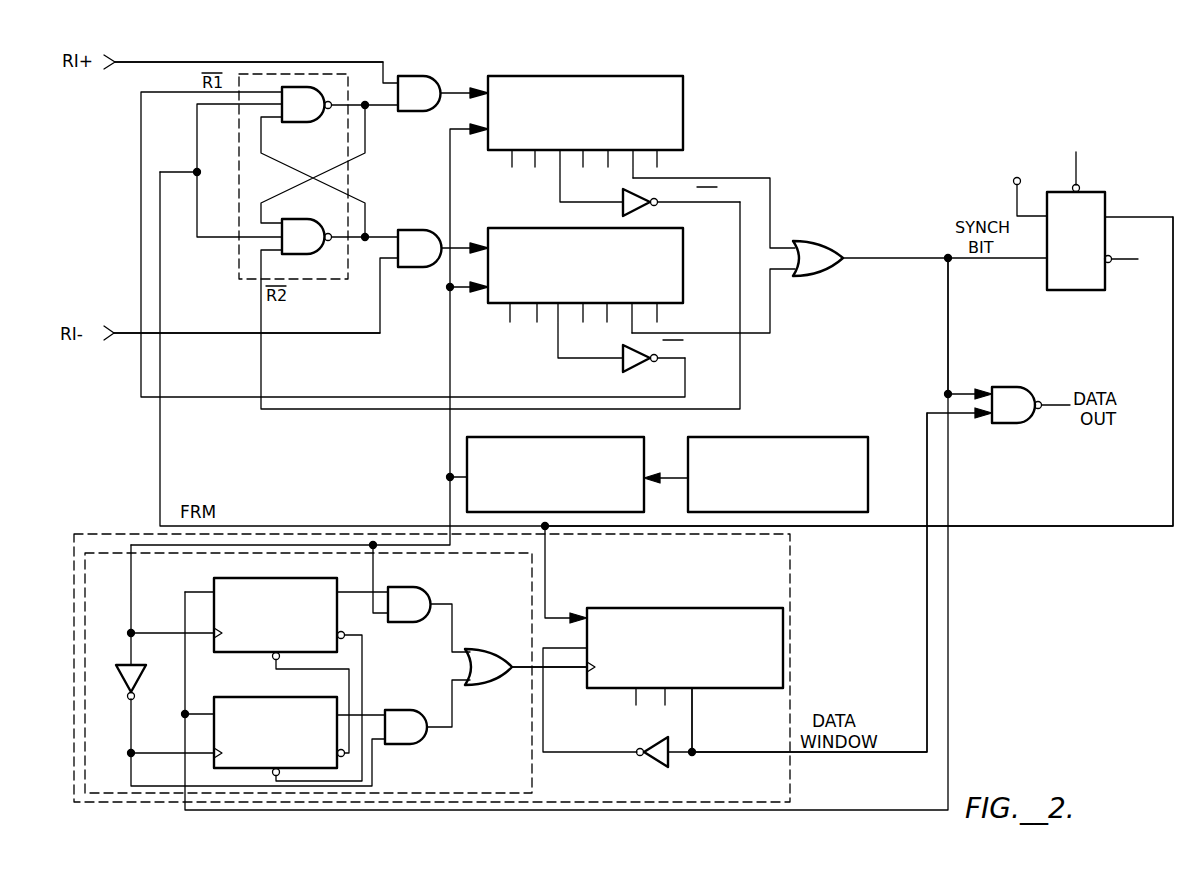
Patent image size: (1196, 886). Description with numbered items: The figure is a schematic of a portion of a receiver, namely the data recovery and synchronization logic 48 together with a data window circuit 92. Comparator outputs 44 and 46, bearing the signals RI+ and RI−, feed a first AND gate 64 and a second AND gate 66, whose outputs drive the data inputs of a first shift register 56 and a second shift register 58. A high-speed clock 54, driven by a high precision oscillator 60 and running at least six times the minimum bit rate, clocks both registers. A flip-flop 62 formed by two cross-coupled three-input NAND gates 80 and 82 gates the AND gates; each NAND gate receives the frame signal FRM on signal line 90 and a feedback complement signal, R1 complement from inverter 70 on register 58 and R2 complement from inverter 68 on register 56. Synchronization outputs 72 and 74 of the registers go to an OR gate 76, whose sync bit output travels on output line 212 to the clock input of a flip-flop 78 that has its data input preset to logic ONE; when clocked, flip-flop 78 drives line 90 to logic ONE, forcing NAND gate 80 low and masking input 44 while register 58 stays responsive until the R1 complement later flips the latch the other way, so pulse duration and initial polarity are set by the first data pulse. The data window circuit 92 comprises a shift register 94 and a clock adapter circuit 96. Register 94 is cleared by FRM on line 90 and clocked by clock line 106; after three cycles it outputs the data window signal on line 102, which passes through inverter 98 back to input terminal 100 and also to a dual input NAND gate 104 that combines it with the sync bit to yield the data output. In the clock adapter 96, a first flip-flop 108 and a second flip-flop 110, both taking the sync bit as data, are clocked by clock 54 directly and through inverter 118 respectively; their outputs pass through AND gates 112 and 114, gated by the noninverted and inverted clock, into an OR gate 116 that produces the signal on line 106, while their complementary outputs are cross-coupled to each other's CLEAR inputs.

The output 44 is at (113, 60).
The output 46 is at (112, 338).
The data recovery and synchronization logic 48 is at (884, 98).
The high-speed clock 54 is at (612, 437).
The first shift register 56 is at (640, 76).
The second shift register 58 is at (683, 237).
The high precision oscillator 60 is at (838, 437).
The flip-flop 62 is at (238, 257).
The first AND gate 64 is at (413, 76).
The second AND gate 66 is at (397, 239).
The inverter 68 is at (622, 197).
The inverter 70 is at (623, 352).
The synchronization output 72 is at (681, 178).
The synchronization output 74 is at (685, 333).
The OR gate 76 is at (820, 242).
The flip-flop 78 is at (1097, 192).
The NAND gate 80 is at (293, 122).
The NAND gate 82 is at (287, 218).
The signal line 90 is at (1050, 526).
The data window circuit 92 is at (792, 574).
The shift register 94 is at (718, 608).
The clock adapter circuit 96 is at (533, 792).
The inverter 98 is at (654, 742).
The input terminal 100 is at (585, 645).
The line 102 is at (698, 724).
The NAND gate 104 is at (1010, 387).
The clock line 106 is at (550, 668).
The first flip-flop 108 is at (256, 578).
The second flip-flop 110 is at (240, 697).
The AND gate 112 is at (420, 587).
The AND gate 114 is at (390, 710).
The OR gate 116 is at (478, 648).
The inverter 118 is at (132, 668).
The output line 212 is at (945, 256).